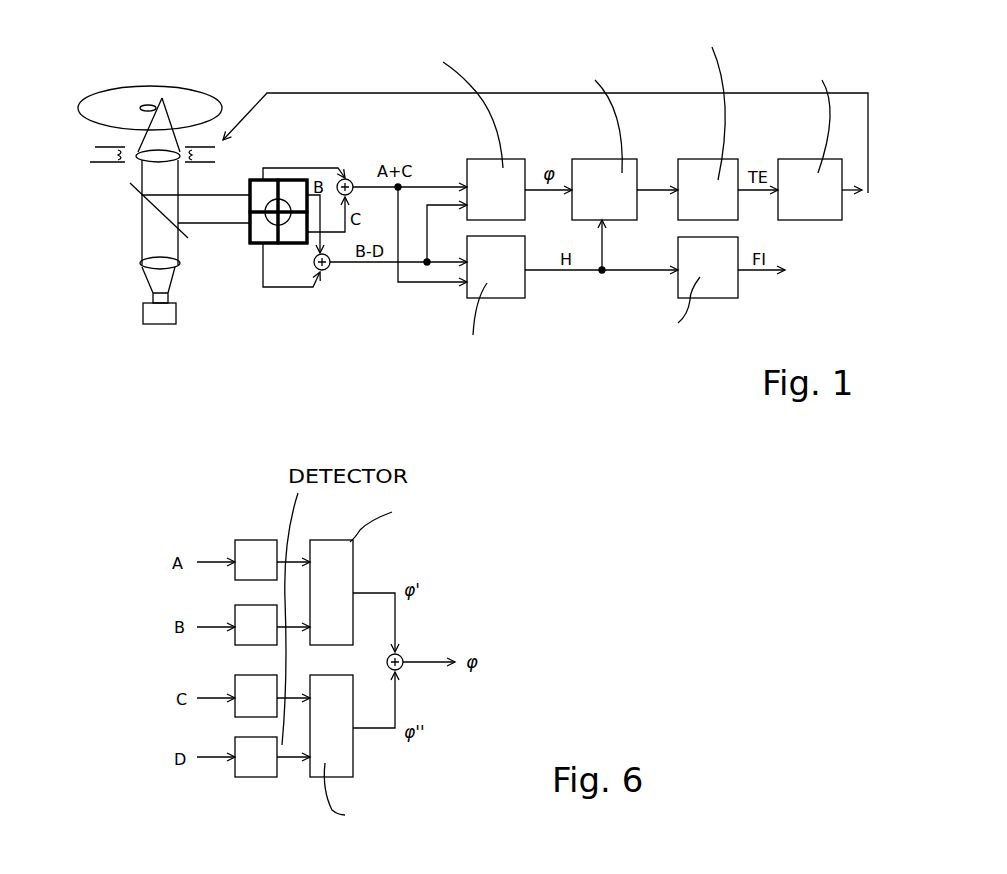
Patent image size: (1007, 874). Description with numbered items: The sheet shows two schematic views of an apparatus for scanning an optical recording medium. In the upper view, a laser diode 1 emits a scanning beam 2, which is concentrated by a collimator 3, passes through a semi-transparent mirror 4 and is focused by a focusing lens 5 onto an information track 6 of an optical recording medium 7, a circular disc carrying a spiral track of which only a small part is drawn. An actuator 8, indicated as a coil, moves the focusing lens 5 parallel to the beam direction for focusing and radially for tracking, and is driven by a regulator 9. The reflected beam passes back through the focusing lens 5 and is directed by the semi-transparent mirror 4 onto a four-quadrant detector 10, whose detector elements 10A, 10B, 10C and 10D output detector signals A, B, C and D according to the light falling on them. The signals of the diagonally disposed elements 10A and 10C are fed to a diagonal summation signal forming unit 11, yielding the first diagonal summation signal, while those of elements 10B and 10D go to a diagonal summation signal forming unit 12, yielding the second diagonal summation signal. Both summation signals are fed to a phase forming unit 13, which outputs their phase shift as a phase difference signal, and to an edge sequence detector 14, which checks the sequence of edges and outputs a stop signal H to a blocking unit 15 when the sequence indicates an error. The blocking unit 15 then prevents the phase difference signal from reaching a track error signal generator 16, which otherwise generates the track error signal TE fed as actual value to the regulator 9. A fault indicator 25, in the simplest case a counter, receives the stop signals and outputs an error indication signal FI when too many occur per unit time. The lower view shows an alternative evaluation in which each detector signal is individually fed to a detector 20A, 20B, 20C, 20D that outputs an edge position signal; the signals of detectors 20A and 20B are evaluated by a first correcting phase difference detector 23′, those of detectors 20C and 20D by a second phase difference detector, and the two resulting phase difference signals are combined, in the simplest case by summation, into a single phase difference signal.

In FIG. 1, the laser diode 1 is at (143, 315).
In FIG. 1, the scanning beam 2 is at (145, 280).
In FIG. 1, the collimator 3 is at (140, 264).
In FIG. 1, the semi-transparent mirror 4 is at (133, 188).
In FIG. 1, the focusing lens 5 is at (138, 158).
In FIG. 1, the information track 6 is at (148, 90).
In FIG. 1, the optical recording medium 7 is at (193, 100).
In FIG. 1, the actuator 8 is at (95, 160).
In FIG. 1, the regulator 9 is at (805, 182).
In FIG. 1, the four-quadrant detector 10 is at (253, 243).
In FIG. 1, the detector element 10A is at (250, 181).
In FIG. 1, the detector element 10B is at (293, 190).
In FIG. 1, the detector element 10C is at (293, 235).
In FIG. 1, the detector element 10D is at (253, 240).
In FIG. 1, the diagonal summation signal forming unit 11 is at (355, 177).
In FIG. 1, the diagonal summation signal forming unit 12 is at (333, 268).
In FIG. 1, the phase forming unit 13 is at (492, 170).
In FIG. 1, the edge sequence detector 14 is at (517, 285).
In FIG. 1, the blocking unit 15 is at (607, 172).
In FIG. 1, the track error signal generator 16 is at (700, 175).
In FIG. 1, the fault indicator 25 is at (723, 285).
In FIG. 6, the detector 20A is at (258, 556).
In FIG. 6, the detector 20B is at (255, 622).
In FIG. 6, the detector 20C is at (255, 695).
In FIG. 6, the detector 20D is at (257, 770).
In FIG. 6, the first correcting phase difference detector 23′ is at (340, 567).